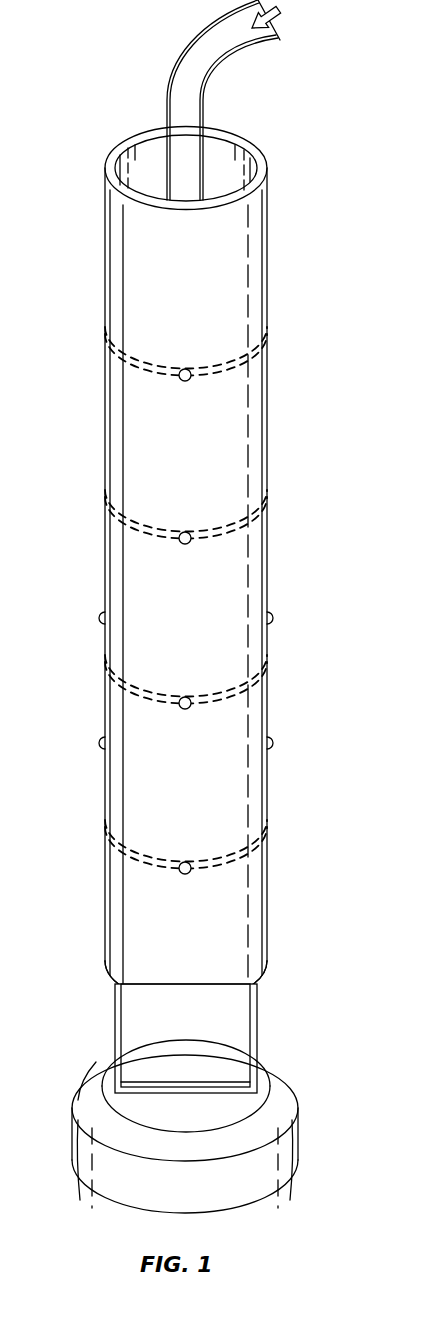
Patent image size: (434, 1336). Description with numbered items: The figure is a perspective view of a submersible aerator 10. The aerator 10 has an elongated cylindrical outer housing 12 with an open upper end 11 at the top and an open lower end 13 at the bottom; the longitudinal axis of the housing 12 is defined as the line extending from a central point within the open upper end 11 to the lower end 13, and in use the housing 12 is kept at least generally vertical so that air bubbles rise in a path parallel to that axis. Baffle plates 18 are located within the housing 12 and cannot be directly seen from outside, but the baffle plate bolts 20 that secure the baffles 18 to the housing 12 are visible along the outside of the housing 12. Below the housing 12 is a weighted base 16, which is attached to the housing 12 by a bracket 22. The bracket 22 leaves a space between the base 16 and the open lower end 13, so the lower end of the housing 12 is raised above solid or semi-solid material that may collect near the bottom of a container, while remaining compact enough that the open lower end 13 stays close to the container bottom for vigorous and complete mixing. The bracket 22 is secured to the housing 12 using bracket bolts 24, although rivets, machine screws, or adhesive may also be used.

The submersible aerator 10 is at (307, 182).
The open upper end 11 is at (217, 150).
The elongated cylindrical outer housing 12 is at (267, 255).
The open lower end 13 is at (223, 1000).
The weighted base 16 is at (72, 1125).
The baffle plates 18 is at (227, 370).
The baffle plate bolts 20 is at (187, 380).
The bracket 22 is at (114, 1020).
The bracket bolts 24 is at (99, 618).